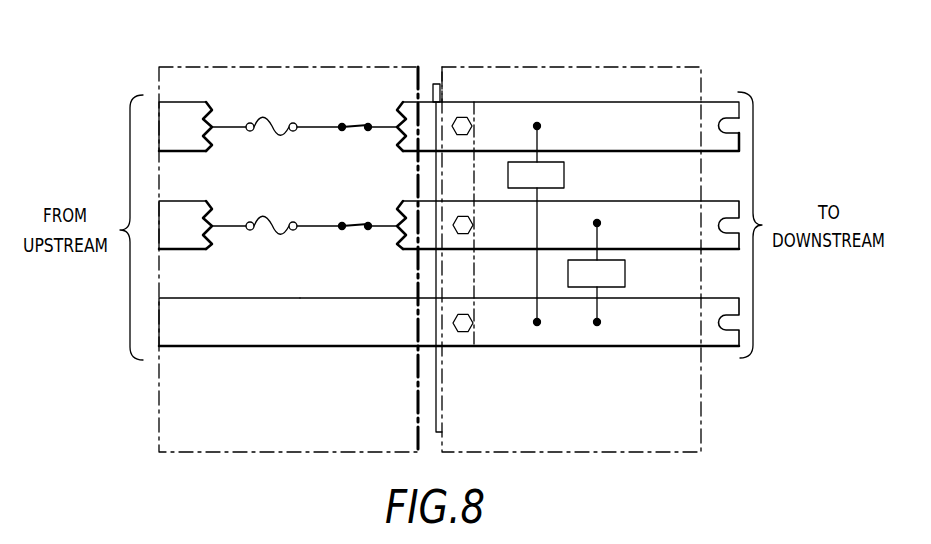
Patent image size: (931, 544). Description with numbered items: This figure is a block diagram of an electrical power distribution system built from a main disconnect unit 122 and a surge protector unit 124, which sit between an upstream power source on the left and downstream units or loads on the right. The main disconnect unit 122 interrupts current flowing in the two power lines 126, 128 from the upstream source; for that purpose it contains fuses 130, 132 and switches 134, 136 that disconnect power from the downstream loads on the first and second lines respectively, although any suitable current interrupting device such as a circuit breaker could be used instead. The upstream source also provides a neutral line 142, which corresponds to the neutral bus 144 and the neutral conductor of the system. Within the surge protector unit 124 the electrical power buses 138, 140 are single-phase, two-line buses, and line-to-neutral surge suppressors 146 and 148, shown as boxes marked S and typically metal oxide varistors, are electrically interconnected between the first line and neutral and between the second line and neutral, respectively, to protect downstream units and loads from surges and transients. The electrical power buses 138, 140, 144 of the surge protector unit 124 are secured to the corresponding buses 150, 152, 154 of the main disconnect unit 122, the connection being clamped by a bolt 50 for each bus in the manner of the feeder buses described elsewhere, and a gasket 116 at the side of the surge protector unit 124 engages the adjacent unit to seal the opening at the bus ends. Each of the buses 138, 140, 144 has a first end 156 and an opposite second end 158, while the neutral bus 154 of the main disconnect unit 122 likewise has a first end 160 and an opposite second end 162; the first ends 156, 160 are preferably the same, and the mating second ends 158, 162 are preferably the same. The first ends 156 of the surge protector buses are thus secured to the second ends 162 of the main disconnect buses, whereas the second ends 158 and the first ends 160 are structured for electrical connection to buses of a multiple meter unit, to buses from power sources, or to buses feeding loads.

The bolt 50 is at (458, 134).
The gasket 116 is at (437, 84).
The main disconnect unit 122 is at (278, 67).
The surge protector unit 124 is at (623, 67).
The power line 126 is at (190, 102).
The power line 128 is at (190, 201).
The fuse 130 is at (276, 136).
The fuse 132 is at (276, 235).
The switch 134 is at (362, 122).
The switch 136 is at (362, 222).
The electrical power bus 138 is at (740, 139).
The electrical power bus 140 is at (740, 205).
The neutral line 142 is at (190, 298).
The neutral bus 144 is at (740, 308).
The line-to-neutral surge suppressor 146 is at (564, 175).
The line-to-neutral surge suppressor 148 is at (625, 274).
The bus 150 is at (405, 102).
The bus 152 is at (405, 201).
The neutral bus 154 is at (392, 298).
The first end 156 is at (461, 98).
The second end 158 is at (717, 93).
The first end 160 is at (178, 348).
The second end 162 is at (463, 348).